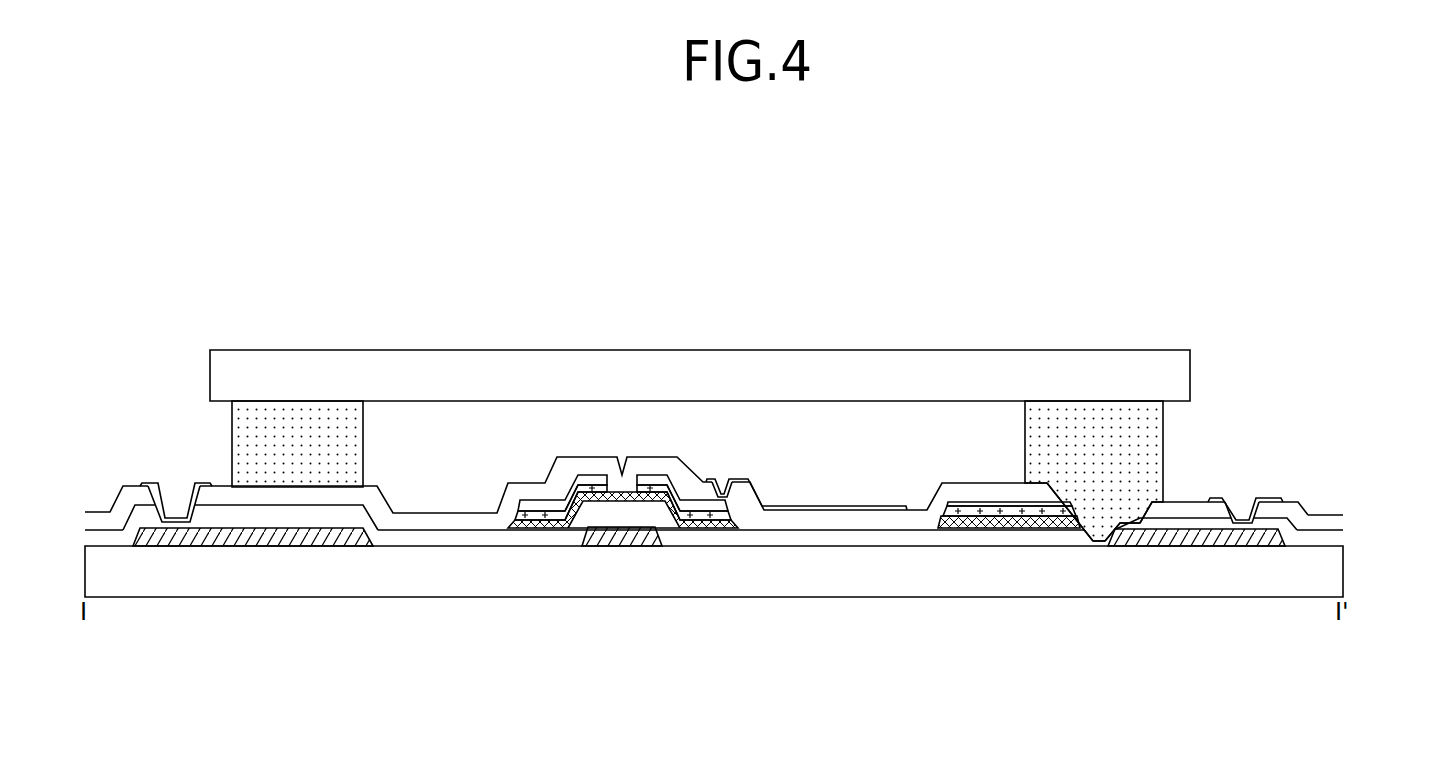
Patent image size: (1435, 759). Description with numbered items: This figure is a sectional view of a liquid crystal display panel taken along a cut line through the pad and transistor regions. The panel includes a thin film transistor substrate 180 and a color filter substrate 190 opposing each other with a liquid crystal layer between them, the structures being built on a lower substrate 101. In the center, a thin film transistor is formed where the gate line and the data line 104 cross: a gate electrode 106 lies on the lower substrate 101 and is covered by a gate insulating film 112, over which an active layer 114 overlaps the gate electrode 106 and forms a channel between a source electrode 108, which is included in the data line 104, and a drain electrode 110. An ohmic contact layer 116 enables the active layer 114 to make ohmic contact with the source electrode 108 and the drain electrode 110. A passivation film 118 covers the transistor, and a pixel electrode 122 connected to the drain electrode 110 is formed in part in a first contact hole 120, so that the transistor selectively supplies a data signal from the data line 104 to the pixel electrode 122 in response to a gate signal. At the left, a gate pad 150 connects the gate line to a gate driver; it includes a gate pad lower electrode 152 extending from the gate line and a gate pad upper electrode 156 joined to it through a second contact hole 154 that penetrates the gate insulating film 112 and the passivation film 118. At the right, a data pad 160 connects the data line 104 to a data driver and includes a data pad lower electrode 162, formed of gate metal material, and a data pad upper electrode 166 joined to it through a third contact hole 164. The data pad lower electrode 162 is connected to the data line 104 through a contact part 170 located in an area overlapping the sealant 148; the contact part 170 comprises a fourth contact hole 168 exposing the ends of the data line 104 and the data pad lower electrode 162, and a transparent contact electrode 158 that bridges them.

The lower substrate 101 is at (1345, 578).
The data line 104 is at (963, 528).
The gate electrode 106 is at (633, 542).
The source electrode 108 is at (530, 528).
The drain electrode 110 is at (740, 528).
The gate insulating film 112 is at (1345, 530).
The active layer 114 is at (570, 528).
The ohmic contact layer 116 is at (692, 528).
The passivation film 118 is at (1345, 516).
The first contact hole 120 is at (718, 482).
The pixel electrode 122 is at (755, 490).
The sealant 148 is at (1160, 450).
The gate pad 150 is at (157, 413).
The gate pad lower electrode 152 is at (260, 544).
The second contact hole 154 is at (173, 503).
The gate pad upper electrode 156 is at (145, 482).
The contact electrode 158 is at (1100, 546).
The data pad 160 is at (1275, 450).
The data pad lower electrode 162 is at (1242, 545).
The third contact hole 164 is at (1240, 512).
The data pad upper electrode 166 is at (1282, 500).
The fourth contact hole 168 is at (1120, 545).
The contact part 170 is at (1142, 658).
The thin film transistor substrate 180 is at (1357, 502).
The color filter substrate 190 is at (1181, 377).